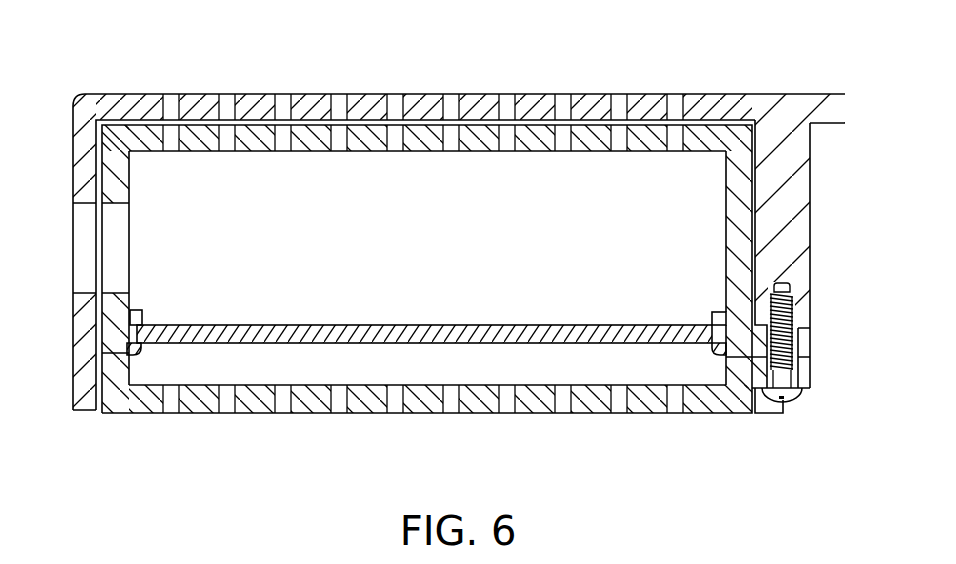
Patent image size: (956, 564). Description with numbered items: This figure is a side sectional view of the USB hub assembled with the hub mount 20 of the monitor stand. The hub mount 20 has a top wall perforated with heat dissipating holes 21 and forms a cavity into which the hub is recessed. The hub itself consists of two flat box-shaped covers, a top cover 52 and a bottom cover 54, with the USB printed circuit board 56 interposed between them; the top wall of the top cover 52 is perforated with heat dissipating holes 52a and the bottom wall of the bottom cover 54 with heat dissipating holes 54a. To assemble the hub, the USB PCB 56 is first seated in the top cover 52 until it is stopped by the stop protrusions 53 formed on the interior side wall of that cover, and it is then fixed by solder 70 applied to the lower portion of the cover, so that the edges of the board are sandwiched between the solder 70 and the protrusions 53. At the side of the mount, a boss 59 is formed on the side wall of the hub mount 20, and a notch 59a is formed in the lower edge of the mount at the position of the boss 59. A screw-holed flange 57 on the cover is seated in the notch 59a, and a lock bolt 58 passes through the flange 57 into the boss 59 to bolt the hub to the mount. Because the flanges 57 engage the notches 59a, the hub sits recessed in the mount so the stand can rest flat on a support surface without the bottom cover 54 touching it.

The hub mount 20 is at (191, 94).
The heat dissipating holes 21 is at (338, 108).
The top cover 52 is at (537, 140).
The heat dissipating holes 52a is at (451, 140).
The stop protrusions 53 is at (142, 310).
The bottom cover 54 is at (253, 395).
The heat dissipating holes 54a is at (560, 395).
The USB printed circuit board 56 is at (413, 337).
The screw-holed flanges 57 is at (803, 347).
The lock bolts 58 is at (795, 400).
The boss 59 is at (792, 185).
The notch 59a is at (763, 398).
The solder 70 is at (136, 355).